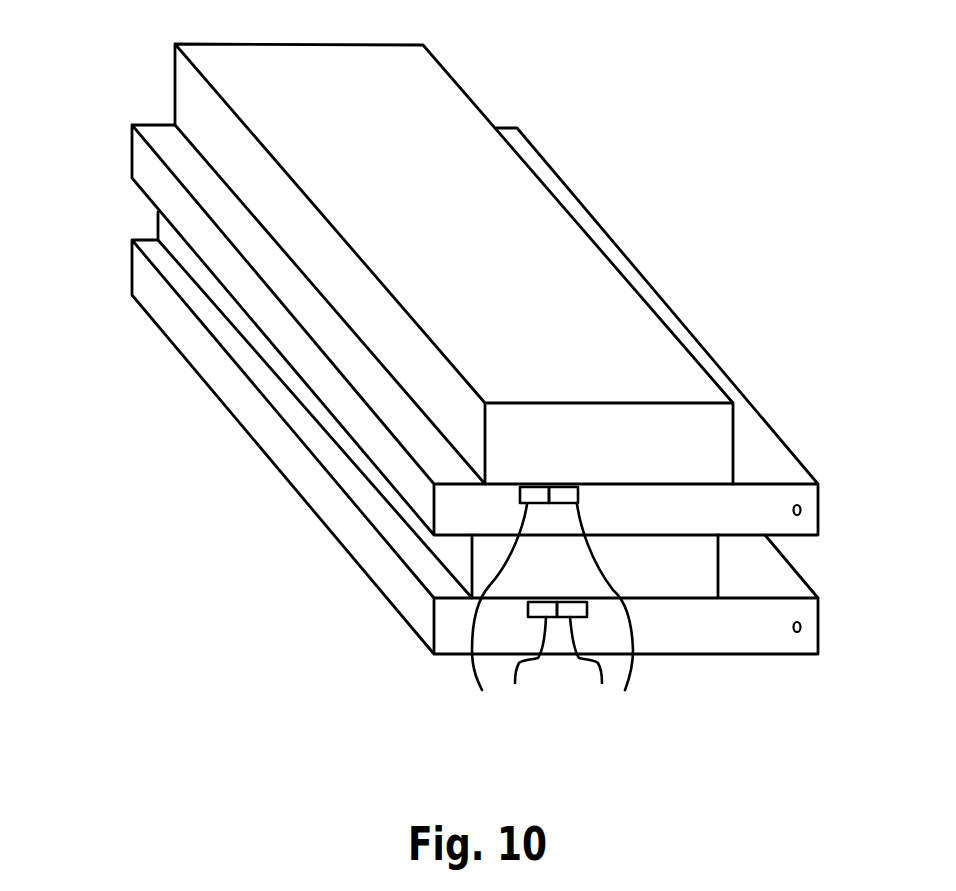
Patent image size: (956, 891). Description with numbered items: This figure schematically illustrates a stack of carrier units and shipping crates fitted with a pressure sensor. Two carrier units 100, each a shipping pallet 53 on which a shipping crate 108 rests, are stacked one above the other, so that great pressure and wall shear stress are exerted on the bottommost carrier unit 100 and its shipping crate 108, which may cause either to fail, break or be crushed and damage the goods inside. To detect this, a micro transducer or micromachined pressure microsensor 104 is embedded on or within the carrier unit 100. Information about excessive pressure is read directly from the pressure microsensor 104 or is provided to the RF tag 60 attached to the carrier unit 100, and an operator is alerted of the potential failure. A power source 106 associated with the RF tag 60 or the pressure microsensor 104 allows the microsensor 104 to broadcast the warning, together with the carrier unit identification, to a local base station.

The pallet 53 is at (466, 385).
The RF tag 60 is at (799, 510).
The carrier unit 100 is at (766, 418).
The pressure microsensor 104 is at (514, 607).
The power source 106 is at (591, 607).
The shipping crate 108 is at (203, 87).